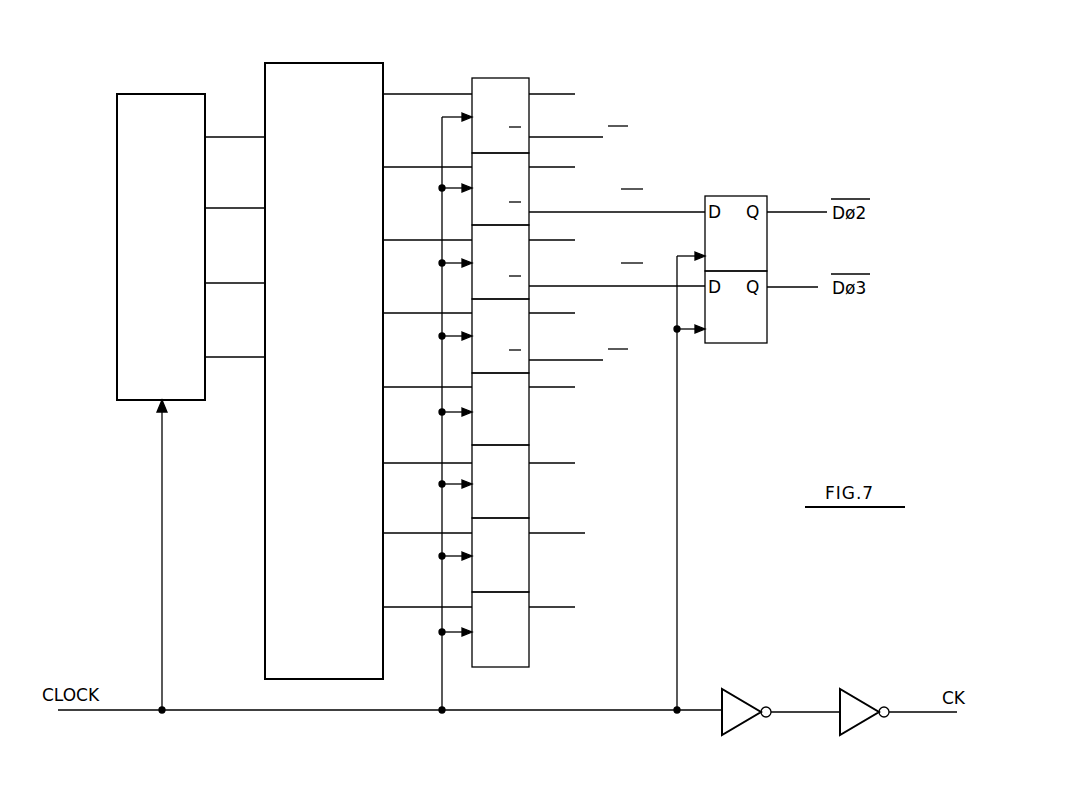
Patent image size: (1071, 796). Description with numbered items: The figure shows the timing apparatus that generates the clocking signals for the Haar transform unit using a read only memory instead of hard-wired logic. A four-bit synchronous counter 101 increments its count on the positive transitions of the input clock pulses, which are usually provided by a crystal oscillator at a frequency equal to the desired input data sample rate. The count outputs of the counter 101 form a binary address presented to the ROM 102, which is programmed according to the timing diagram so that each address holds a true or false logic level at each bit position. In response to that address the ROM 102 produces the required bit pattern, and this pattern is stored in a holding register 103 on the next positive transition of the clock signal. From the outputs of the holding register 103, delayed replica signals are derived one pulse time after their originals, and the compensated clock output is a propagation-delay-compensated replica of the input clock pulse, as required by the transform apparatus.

The 4-bit synchronous counter 101 is at (120, 150).
The ROM 102 is at (368, 72).
The holding register 103 is at (528, 80).